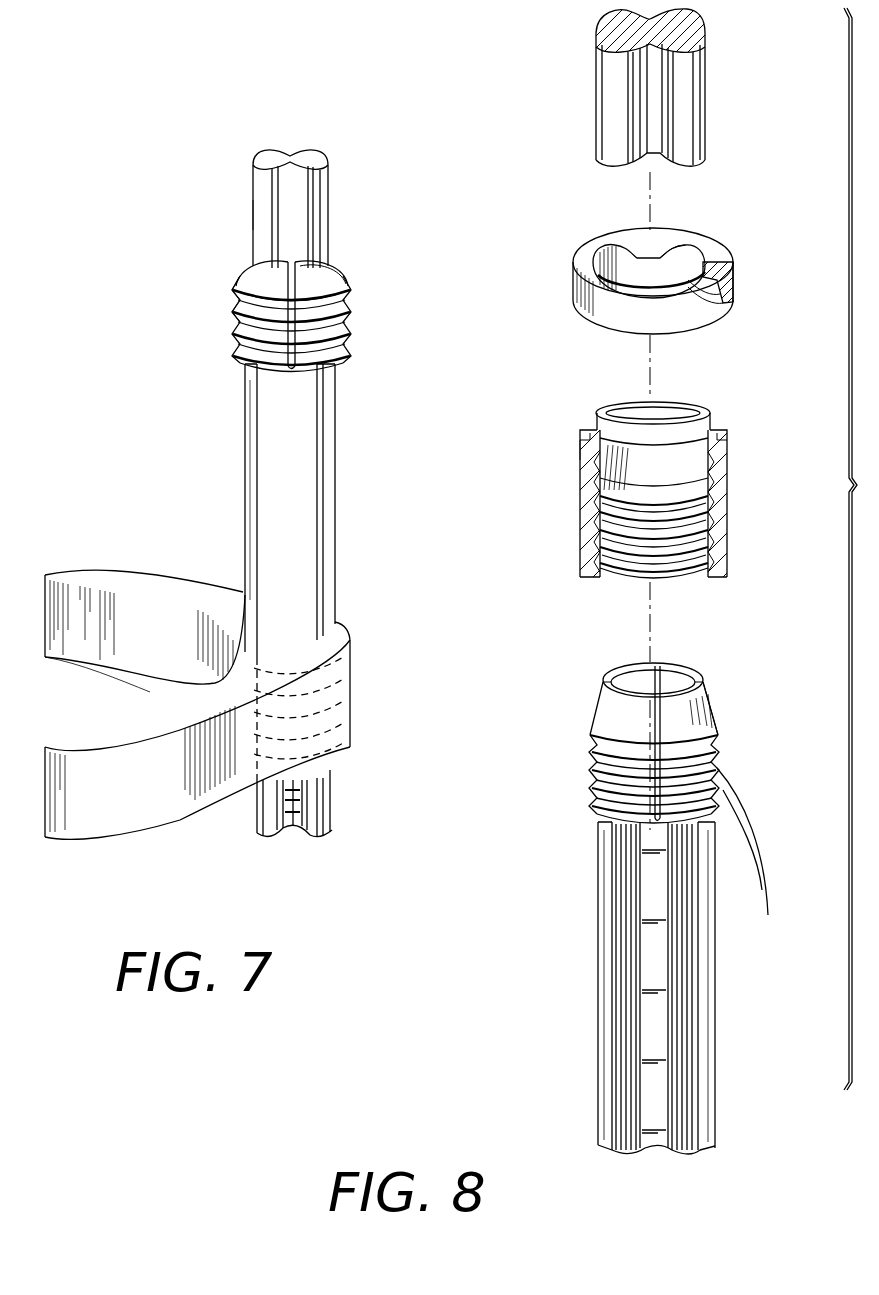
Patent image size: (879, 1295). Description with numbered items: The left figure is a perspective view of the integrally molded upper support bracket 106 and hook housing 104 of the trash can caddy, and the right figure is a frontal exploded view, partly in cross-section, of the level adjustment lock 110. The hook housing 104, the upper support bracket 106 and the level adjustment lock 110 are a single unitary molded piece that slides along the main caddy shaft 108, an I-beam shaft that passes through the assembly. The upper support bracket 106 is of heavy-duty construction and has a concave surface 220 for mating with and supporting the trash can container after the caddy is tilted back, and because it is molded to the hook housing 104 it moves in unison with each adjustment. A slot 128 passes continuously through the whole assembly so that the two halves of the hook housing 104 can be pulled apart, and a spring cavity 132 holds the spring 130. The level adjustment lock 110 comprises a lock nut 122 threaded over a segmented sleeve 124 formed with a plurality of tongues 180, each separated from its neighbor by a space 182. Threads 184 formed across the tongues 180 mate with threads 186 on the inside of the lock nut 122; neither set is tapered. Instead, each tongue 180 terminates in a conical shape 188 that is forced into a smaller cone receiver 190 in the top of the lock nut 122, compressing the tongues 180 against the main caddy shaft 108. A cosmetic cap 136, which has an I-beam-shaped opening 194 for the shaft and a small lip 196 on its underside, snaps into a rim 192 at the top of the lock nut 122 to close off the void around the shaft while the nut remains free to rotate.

In FIG. 7, the hook housing 104 is at (317, 572).
In FIG. 8, the hook housing 104 is at (708, 1066).
In FIG. 7, the upper support bracket 106 is at (159, 574).
In FIG. 7, the main caddy shaft 108 is at (324, 180).
In FIG. 8, the main caddy shaft 108 is at (684, 90).
In FIG. 7, the level adjustment lock 110 is at (142, 363).
In FIG. 8, the level adjustment lock 110 is at (543, 454).
In FIG. 8, the lock nut 122 is at (584, 507).
In FIG. 7, the segmented sleeve 124 is at (351, 321).
In FIG. 8, the segmented sleeve 124 is at (592, 770).
In FIG. 7, the slot 128 is at (248, 460).
In FIG. 8, the slot 128 is at (608, 682).
In FIG. 7, the spring 130 is at (361, 745).
In FIG. 7, the spring cavity 132 is at (345, 690).
In FIG. 8, the cosmetic cap 136 is at (612, 238).
In FIG. 7, the tongues 180 is at (260, 268).
In FIG. 8, the tongues 180 is at (692, 666).
In FIG. 7, the space 182 is at (258, 286).
In FIG. 8, the space 182 is at (656, 665).
In FIG. 7, the threads 184 is at (241, 339).
In FIG. 8, the threads 184 is at (756, 860).
In FIG. 8, the threads 186 is at (592, 578).
In FIG. 7, the conical shape 188 is at (334, 281).
In FIG. 8, the conical shape 188 is at (712, 706).
In FIG. 8, the cone receiver 190 is at (674, 462).
In FIG. 8, the rim 192 is at (718, 432).
In FIG. 8, the opening 194 is at (692, 248).
In FIG. 8, the lip 196 is at (720, 304).
In FIG. 7, the concave surface 220 is at (116, 646).